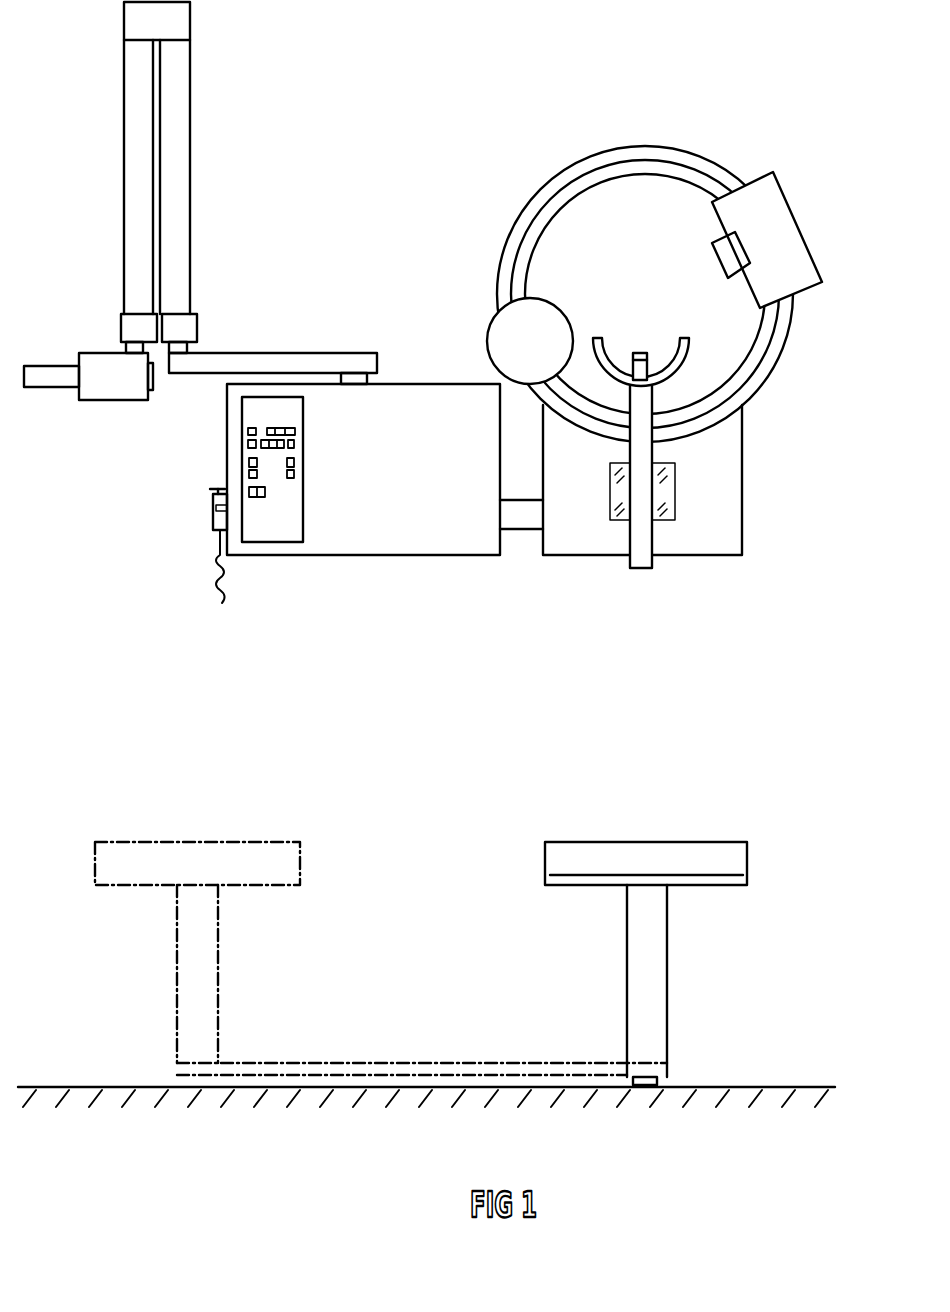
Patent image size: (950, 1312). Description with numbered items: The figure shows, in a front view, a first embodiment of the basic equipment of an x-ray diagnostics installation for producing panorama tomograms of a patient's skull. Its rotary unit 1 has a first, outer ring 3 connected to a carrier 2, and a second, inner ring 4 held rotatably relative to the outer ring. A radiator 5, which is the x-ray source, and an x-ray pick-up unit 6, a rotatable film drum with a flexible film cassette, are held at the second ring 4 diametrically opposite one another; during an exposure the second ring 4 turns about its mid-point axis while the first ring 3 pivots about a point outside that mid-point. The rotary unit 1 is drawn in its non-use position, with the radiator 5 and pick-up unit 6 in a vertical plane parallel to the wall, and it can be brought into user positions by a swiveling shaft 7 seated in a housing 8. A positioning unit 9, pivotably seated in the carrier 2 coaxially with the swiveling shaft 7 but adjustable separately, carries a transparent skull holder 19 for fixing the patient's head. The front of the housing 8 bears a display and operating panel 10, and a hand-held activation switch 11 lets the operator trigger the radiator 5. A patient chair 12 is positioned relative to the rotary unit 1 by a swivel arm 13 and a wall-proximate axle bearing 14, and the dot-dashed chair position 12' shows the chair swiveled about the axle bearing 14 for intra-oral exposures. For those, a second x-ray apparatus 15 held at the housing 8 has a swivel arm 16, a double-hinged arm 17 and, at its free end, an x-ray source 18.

The rotary unit 1 is at (625, 269).
The carrier 2 is at (742, 458).
The first ring 3 is at (525, 213).
The second ring 4 is at (518, 262).
The radiator 5 is at (790, 210).
The x-ray pick-up unit 6 is at (500, 345).
The swiveling shaft 7 is at (520, 520).
The housing 8 is at (413, 530).
The positioning unit 9 is at (642, 548).
The display and operating panel 10 is at (273, 527).
The hand-held activation switch 11 is at (212, 525).
The patient chair 12 is at (646, 933).
The swiveled position of the patient chair 12' is at (381, 932).
The swivel arm 13 is at (666, 1068).
The axle bearing 14 is at (657, 1083).
The second x-ray apparatus 15 is at (108, 296).
The swivel arm 16 is at (257, 362).
The double-hinged arm 17 is at (142, 182).
The x-ray source 18 is at (118, 392).
The skull holder 19 is at (637, 340).